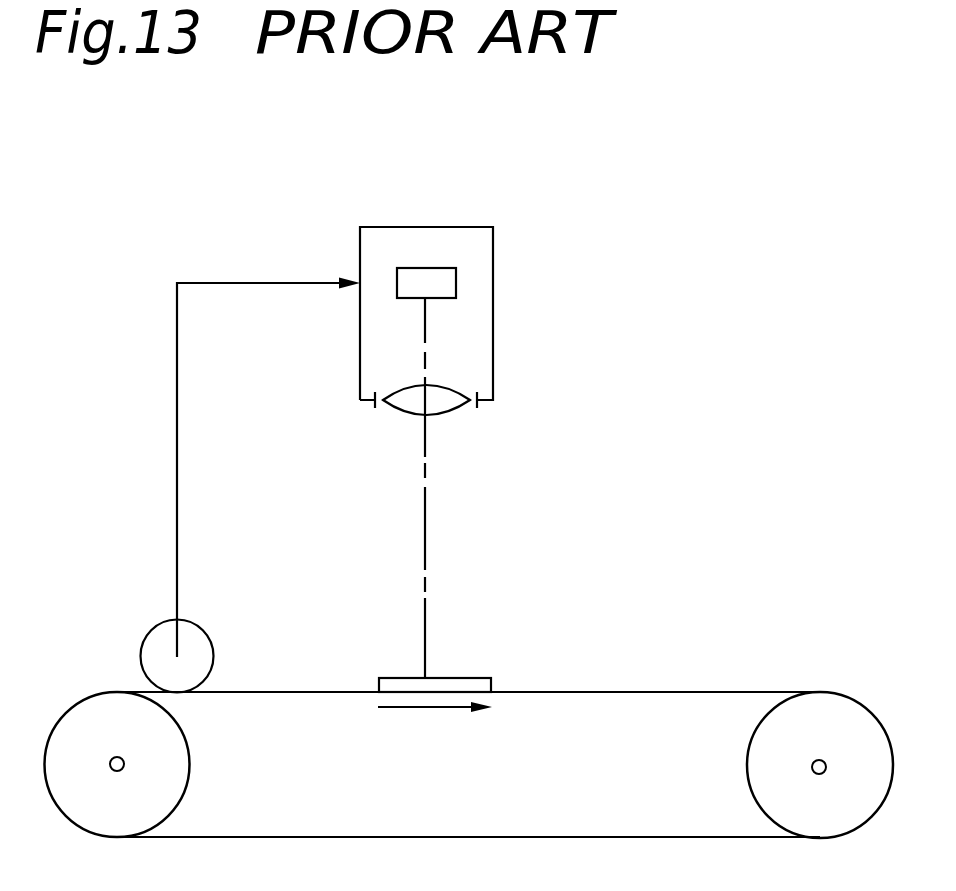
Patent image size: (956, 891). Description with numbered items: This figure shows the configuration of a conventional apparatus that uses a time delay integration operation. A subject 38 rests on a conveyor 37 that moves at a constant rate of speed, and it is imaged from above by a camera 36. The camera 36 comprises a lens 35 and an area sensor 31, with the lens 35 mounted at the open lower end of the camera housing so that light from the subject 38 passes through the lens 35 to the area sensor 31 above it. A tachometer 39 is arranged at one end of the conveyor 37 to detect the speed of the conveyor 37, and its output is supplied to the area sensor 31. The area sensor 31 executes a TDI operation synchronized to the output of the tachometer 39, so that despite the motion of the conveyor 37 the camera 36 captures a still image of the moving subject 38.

The area sensor 31 is at (456, 283).
The lens 35 is at (455, 410).
The camera 36 is at (430, 226).
The conveyor 37 is at (653, 690).
The subject 38 is at (468, 678).
The tachometer 39 is at (197, 642).